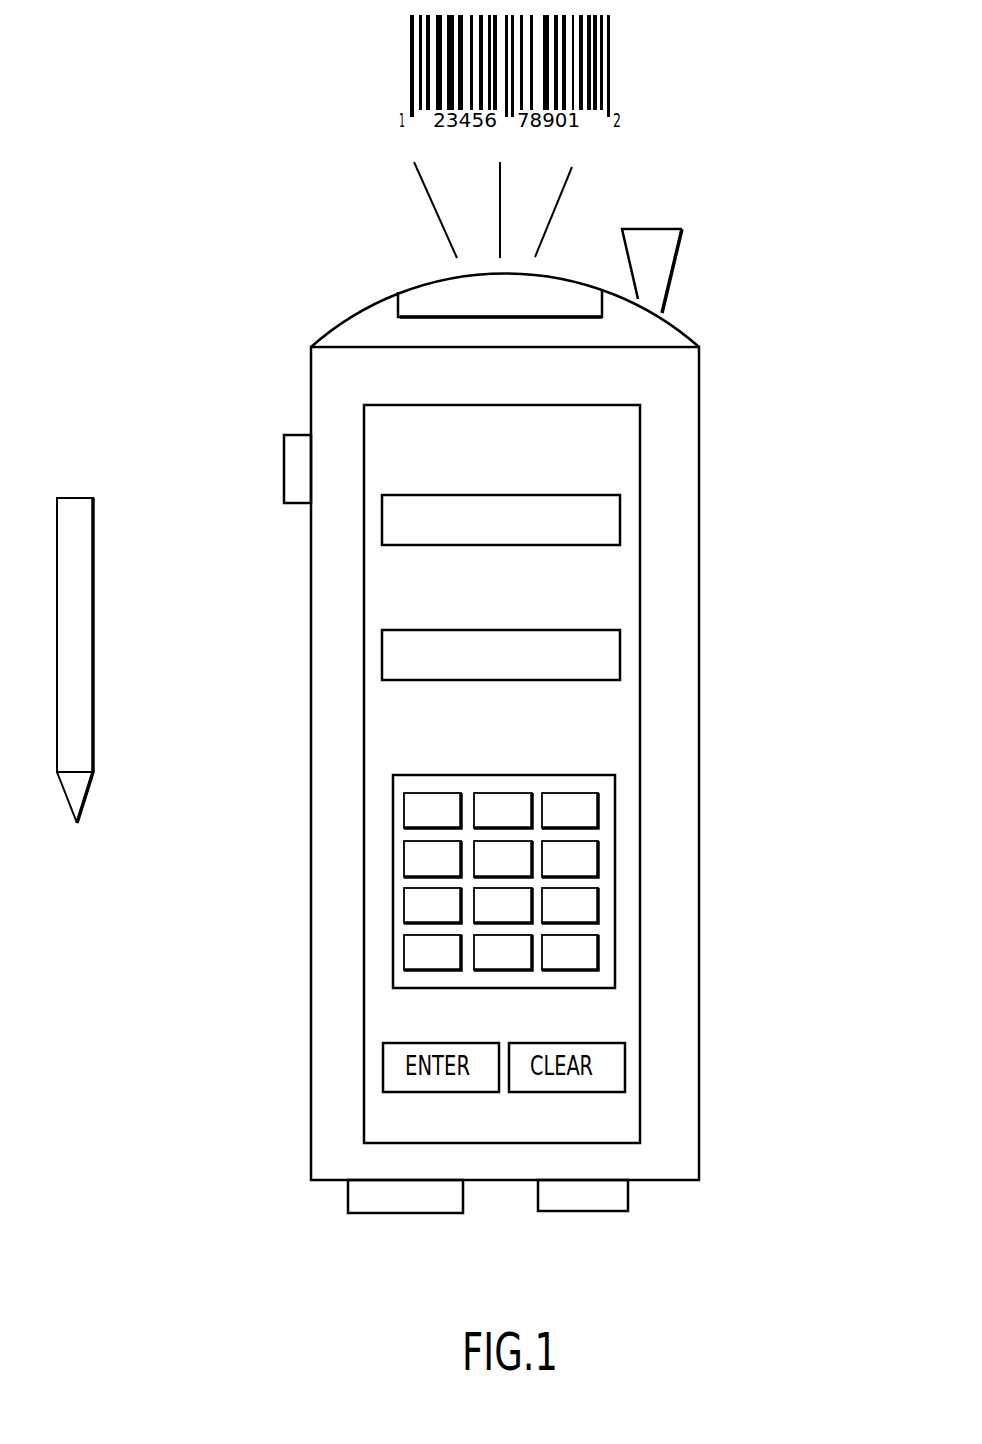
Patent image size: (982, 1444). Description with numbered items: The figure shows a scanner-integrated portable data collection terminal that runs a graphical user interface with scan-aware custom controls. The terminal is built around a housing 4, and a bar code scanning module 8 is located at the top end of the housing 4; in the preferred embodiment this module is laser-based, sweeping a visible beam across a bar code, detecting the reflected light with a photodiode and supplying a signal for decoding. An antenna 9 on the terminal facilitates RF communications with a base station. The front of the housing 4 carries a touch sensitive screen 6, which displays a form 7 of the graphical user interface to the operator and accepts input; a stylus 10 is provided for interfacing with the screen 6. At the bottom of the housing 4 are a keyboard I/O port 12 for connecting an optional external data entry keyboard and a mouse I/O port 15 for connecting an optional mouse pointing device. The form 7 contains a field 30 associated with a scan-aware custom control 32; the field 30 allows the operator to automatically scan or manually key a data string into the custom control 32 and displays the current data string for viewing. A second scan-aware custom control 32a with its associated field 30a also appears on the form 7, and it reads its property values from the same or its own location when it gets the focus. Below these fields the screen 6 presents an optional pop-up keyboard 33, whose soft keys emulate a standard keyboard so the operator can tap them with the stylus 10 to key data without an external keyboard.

The housing 4 is at (700, 1085).
The touch sensitive screen 6 is at (643, 1003).
The form 7 is at (574, 866).
The bar code scanning module 8 is at (418, 302).
The antenna 9 is at (650, 233).
The stylus 10 is at (82, 498).
The keyboard I/O port 12 is at (378, 1215).
The mouse I/O port 15 is at (597, 1213).
The field 30 is at (596, 524).
The scan-aware custom control 32 is at (622, 515).
The field 30a is at (606, 656).
The second scan-aware custom control 32a is at (620, 645).
The pop-up keyboard 33 is at (600, 812).